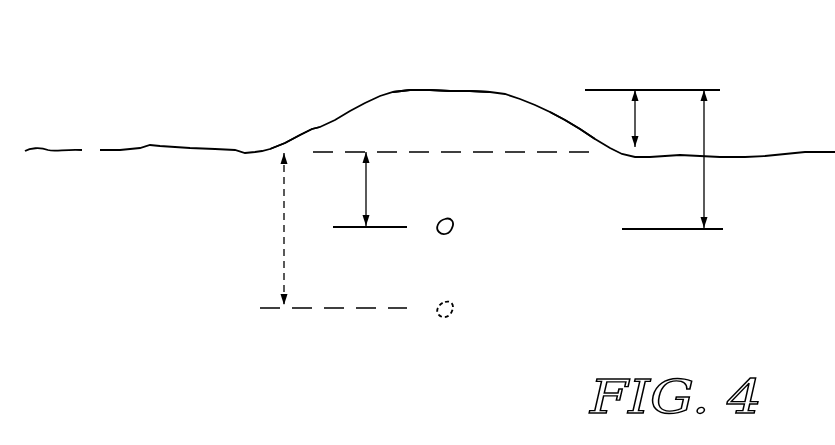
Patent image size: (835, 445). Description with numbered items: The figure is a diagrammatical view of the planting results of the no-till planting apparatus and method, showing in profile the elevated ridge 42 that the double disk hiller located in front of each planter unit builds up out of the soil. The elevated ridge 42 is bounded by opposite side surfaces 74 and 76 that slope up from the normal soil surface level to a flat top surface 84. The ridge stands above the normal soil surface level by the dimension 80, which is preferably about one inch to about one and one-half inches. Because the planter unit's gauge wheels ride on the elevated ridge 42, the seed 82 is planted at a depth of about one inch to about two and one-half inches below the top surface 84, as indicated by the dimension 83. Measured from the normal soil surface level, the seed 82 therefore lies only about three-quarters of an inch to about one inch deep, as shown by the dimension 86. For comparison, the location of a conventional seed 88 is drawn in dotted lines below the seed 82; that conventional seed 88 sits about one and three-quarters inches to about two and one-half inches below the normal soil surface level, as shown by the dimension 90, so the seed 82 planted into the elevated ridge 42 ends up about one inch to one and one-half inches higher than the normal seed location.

The elevated ridge 42 is at (490, 124).
The side surface 74 is at (315, 125).
The side surface 76 is at (559, 122).
The dimension 80 is at (637, 108).
The seed 82 is at (451, 233).
The dimension 83 is at (706, 128).
The top surface 84 is at (448, 90).
The dimension 86 is at (368, 190).
The conventional seed 88 is at (452, 316).
The dimension 90 is at (282, 214).